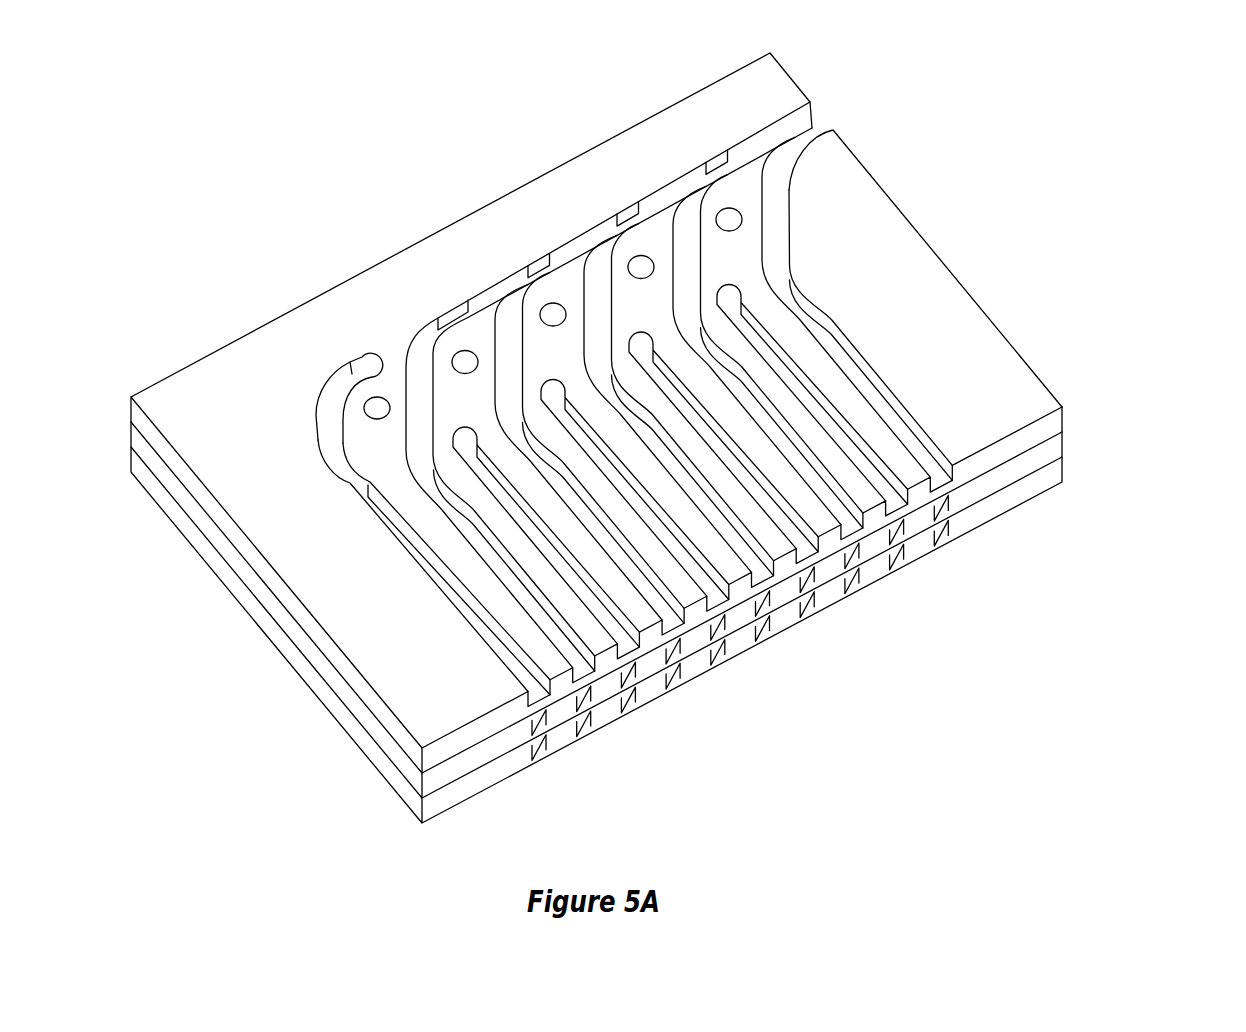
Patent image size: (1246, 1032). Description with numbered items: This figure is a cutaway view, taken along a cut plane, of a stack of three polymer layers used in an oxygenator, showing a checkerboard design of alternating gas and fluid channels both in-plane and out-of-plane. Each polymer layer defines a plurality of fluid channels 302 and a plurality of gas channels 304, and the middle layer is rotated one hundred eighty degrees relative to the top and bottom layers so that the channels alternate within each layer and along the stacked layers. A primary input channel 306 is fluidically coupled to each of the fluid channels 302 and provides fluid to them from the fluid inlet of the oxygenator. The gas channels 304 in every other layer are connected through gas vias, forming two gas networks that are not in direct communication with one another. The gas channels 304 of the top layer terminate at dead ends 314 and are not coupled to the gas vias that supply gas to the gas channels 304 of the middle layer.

The fluid channels 302 is at (537, 775).
The gas channels 304 is at (584, 733).
The primary input channel 306 is at (618, 238).
The dead ends 314 is at (465, 434).